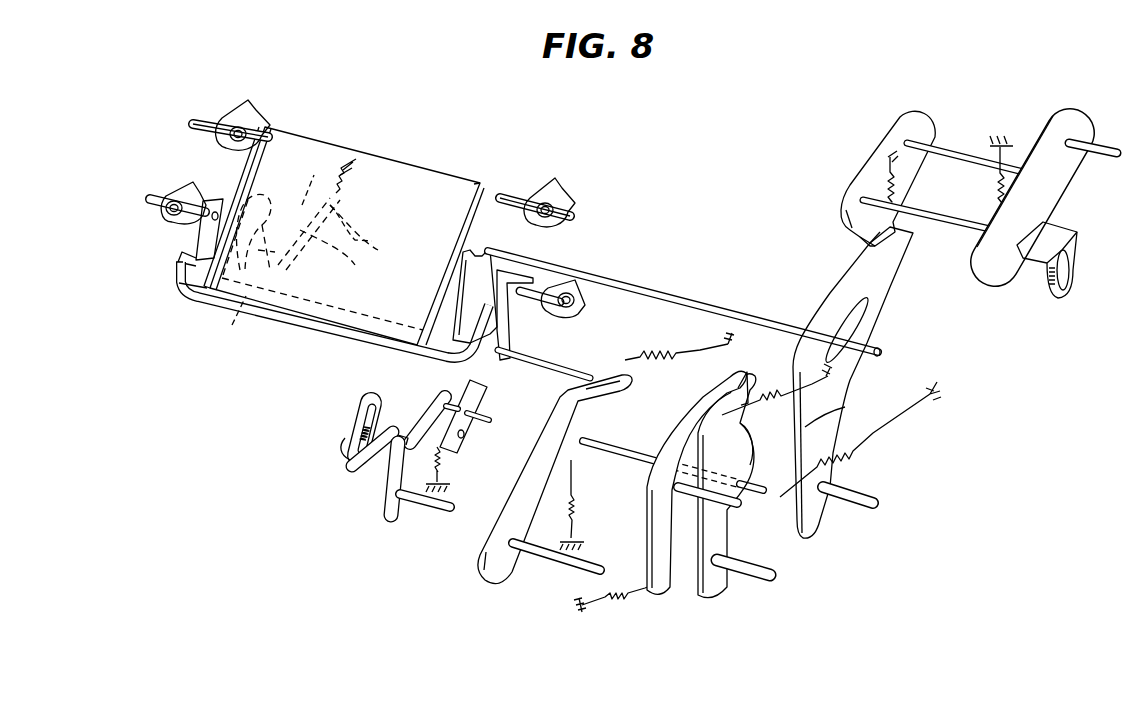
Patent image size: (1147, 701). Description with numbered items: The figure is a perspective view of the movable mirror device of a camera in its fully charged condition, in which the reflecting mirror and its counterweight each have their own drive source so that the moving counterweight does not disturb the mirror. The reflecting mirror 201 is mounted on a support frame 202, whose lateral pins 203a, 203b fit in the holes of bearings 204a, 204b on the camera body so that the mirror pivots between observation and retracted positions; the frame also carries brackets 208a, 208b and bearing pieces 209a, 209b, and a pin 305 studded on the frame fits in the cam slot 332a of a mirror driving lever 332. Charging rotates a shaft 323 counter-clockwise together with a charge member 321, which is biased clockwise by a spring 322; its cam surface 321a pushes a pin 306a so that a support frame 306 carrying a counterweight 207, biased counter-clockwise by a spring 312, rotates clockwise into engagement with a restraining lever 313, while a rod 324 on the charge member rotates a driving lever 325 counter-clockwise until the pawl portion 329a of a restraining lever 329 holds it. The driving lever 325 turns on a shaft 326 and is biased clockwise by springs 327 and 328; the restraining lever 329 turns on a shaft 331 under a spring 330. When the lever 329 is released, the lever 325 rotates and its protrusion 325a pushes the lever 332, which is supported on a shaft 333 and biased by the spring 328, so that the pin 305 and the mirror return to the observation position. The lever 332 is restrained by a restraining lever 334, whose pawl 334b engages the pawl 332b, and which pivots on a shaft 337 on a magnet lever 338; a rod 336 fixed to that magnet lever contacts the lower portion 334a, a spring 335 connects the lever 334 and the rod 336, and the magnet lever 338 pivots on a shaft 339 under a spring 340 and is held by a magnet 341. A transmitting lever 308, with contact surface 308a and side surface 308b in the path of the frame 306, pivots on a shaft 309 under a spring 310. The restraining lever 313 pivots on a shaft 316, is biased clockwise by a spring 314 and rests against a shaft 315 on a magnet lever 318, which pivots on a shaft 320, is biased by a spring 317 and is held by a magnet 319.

The reflecting mirror 201 is at (438, 178).
The support frame 202 is at (488, 190).
The pin 203a is at (522, 188).
The pin 203b is at (205, 120).
The bearing 204a is at (560, 180).
The bearing 204b is at (255, 125).
The counterweight 207 is at (455, 325).
The bracket 208a is at (528, 306).
The bracket 208b is at (208, 222).
The pin holder 209a is at (576, 298).
The pin holder 209b is at (180, 195).
The pin 305 is at (650, 290).
The support frame 306 is at (300, 318).
The pin 306a is at (546, 368).
The transmitting lever 308 is at (300, 258).
The contact surface 308a is at (296, 177).
The lever arm 308b is at (374, 230).
The shaft 309 is at (236, 323).
The spring 310 is at (346, 184).
The spring 312 is at (679, 340).
The restraining lever 313 is at (473, 440).
The spring 314 is at (478, 401).
The shaft 315 is at (490, 423).
The shaft 316 is at (440, 428).
The spring 317 is at (443, 472).
The magnet lever 318 is at (392, 520).
The magnet 319 is at (368, 413).
The shaft 320 is at (432, 512).
The charge member 321 is at (484, 578).
The cam surface 321a is at (598, 392).
The spring 322 is at (576, 512).
The shaft 323 is at (560, 568).
The rod 324 is at (620, 458).
The driving lever 325 is at (718, 598).
The protrusion 325a is at (735, 468).
The shaft 326 is at (766, 580).
The spring 327 is at (780, 498).
The spring 328 is at (773, 408).
The restraining lever 329 is at (665, 598).
The pawl portion 329a is at (723, 383).
The spring 330 is at (620, 605).
The shaft 331 is at (680, 505).
The mirror driving lever 332 is at (822, 530).
The cam slot 332a is at (855, 312).
The pawl 332b is at (870, 250).
The shaft 333 is at (862, 496).
The restraining lever 334 is at (912, 115).
The lower portion 334a is at (895, 245).
The pawl 334b is at (855, 216).
The spring 335 is at (898, 185).
The rod 336 is at (952, 222).
The shaft 337 is at (955, 158).
The magnet lever 338 is at (1072, 118).
The shaft 339 is at (1100, 148).
The spring 340 is at (1000, 188).
The magnet 341 is at (1055, 292).